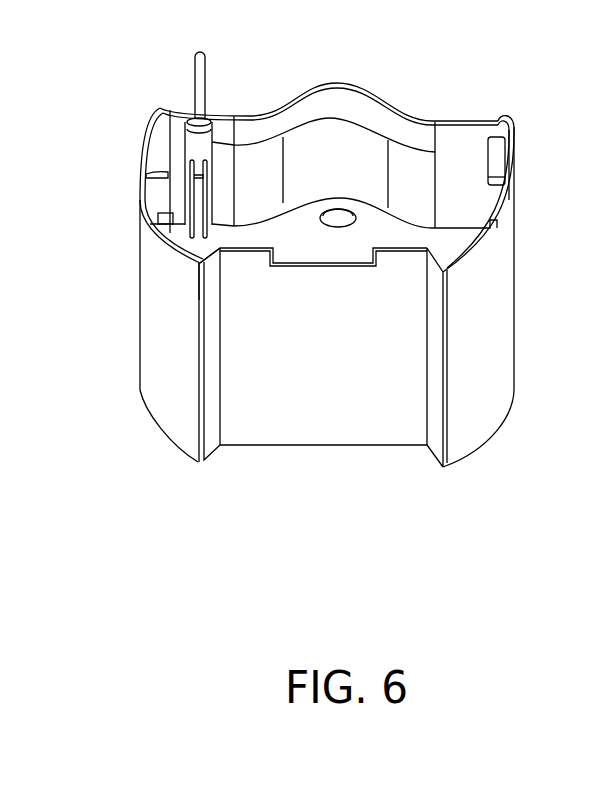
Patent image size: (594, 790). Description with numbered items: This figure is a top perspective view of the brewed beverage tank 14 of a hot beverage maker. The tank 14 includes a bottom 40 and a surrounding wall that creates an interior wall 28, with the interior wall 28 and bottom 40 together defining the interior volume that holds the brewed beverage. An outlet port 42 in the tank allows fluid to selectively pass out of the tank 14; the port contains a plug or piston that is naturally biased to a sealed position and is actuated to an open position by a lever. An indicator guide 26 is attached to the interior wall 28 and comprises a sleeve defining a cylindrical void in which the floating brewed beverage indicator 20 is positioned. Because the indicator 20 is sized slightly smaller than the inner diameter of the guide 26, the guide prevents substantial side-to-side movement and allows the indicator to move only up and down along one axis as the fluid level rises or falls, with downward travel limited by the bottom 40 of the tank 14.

The brewed beverage tank 14 is at (498, 305).
The floating brewed beverage indicator 20 is at (200, 68).
The indicator guide 26 is at (192, 143).
The interior wall 28 is at (465, 133).
The bottom 40 is at (197, 245).
The outlet port 42 is at (340, 228).